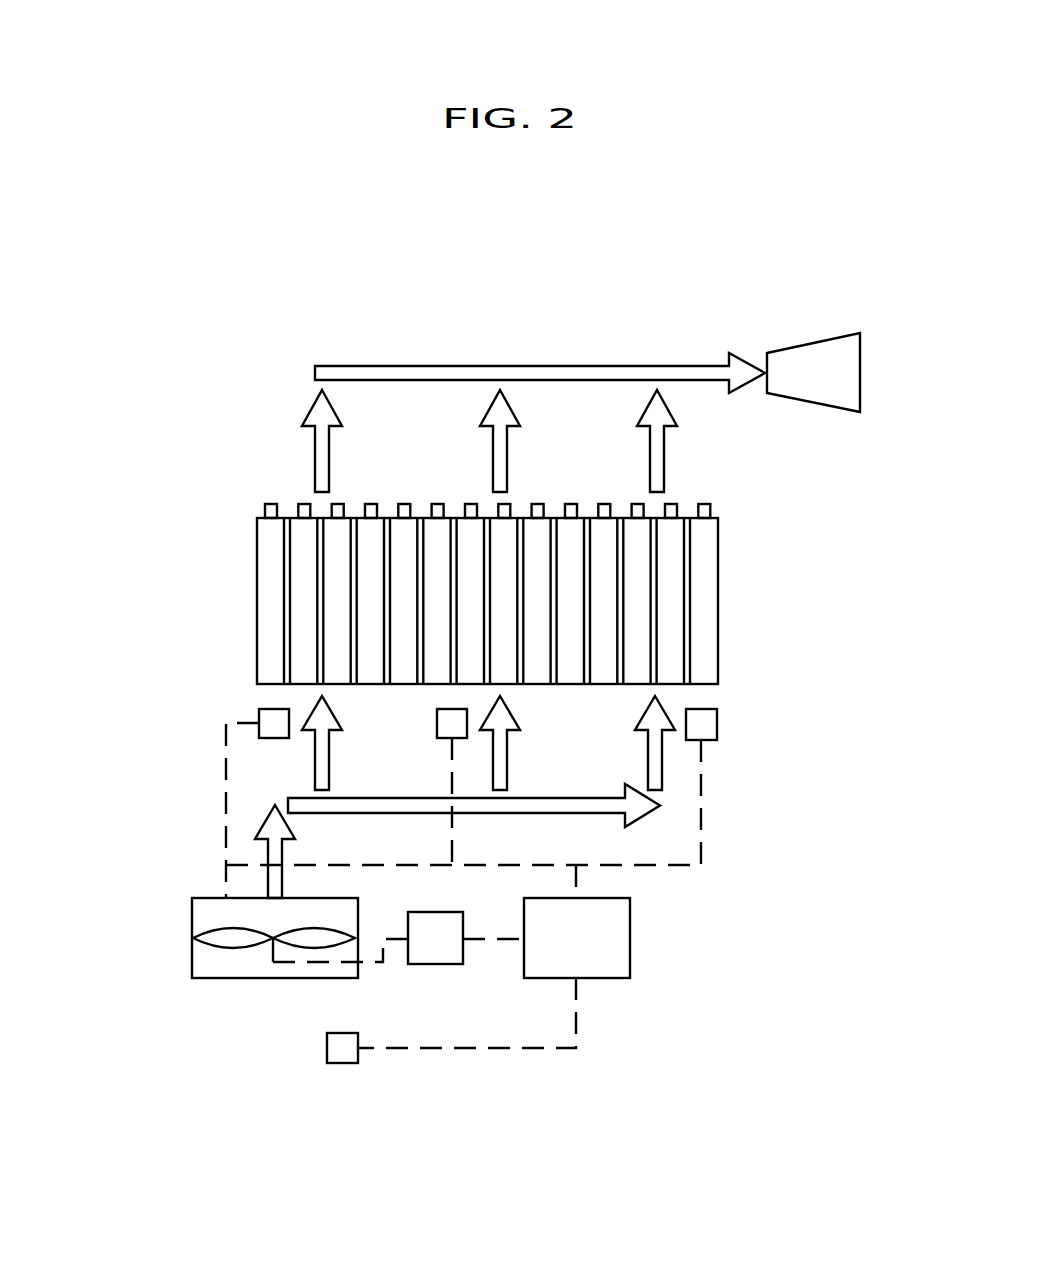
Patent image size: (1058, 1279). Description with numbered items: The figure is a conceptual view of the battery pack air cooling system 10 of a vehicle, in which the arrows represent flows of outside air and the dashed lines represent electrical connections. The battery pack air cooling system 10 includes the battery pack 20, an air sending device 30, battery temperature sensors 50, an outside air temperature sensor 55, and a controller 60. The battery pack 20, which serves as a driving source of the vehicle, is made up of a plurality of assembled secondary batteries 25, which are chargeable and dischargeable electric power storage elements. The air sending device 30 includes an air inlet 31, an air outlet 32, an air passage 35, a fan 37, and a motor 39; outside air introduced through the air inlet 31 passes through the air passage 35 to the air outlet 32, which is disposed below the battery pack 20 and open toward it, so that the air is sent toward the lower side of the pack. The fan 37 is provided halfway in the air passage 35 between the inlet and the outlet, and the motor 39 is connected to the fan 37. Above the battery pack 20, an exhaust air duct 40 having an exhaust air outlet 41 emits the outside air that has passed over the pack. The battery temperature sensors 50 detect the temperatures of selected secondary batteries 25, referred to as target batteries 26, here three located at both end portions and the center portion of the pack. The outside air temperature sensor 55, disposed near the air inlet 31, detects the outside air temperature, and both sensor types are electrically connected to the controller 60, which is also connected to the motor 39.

The battery pack air cooling system 10 is at (176, 296).
The battery pack 20 is at (496, 544).
The secondary battery 25 is at (296, 504).
The target battery 26 is at (517, 504).
The air sending device 30 is at (398, 982).
The air inlet 31 is at (232, 978).
The air outlet 32 is at (234, 942).
The air passage 35 is at (192, 917).
The fan 37 is at (212, 948).
The motor 39 is at (435, 964).
The exhaust air duct 40 is at (613, 304).
The exhaust air outlet 41 is at (785, 348).
The battery temperature sensor 50 is at (259, 715).
The outside air temperature sensor 55 is at (342, 1063).
The controller 60 is at (630, 920).